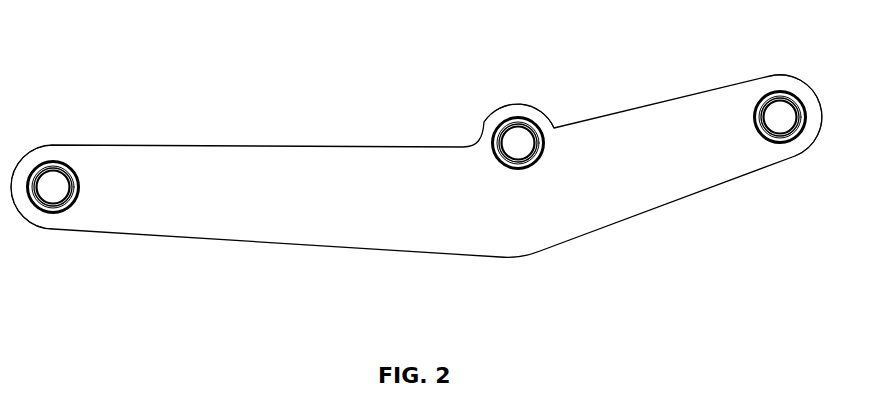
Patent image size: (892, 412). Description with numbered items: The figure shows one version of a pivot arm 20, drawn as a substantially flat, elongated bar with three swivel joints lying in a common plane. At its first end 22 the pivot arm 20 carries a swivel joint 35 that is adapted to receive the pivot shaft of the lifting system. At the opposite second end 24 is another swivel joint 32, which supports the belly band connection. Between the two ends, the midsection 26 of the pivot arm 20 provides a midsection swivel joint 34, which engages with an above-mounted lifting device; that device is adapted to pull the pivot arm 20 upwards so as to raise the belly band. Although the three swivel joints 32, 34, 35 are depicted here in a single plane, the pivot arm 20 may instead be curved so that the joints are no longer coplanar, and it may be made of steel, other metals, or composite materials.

The pivot arm 20 is at (453, 220).
The first end 22 is at (780, 85).
The second end 24 is at (43, 153).
The midsection 26 is at (493, 127).
The swivel joint 32 is at (58, 212).
The midsection swivel joint 34 is at (512, 122).
The swivel joint 35 is at (803, 133).